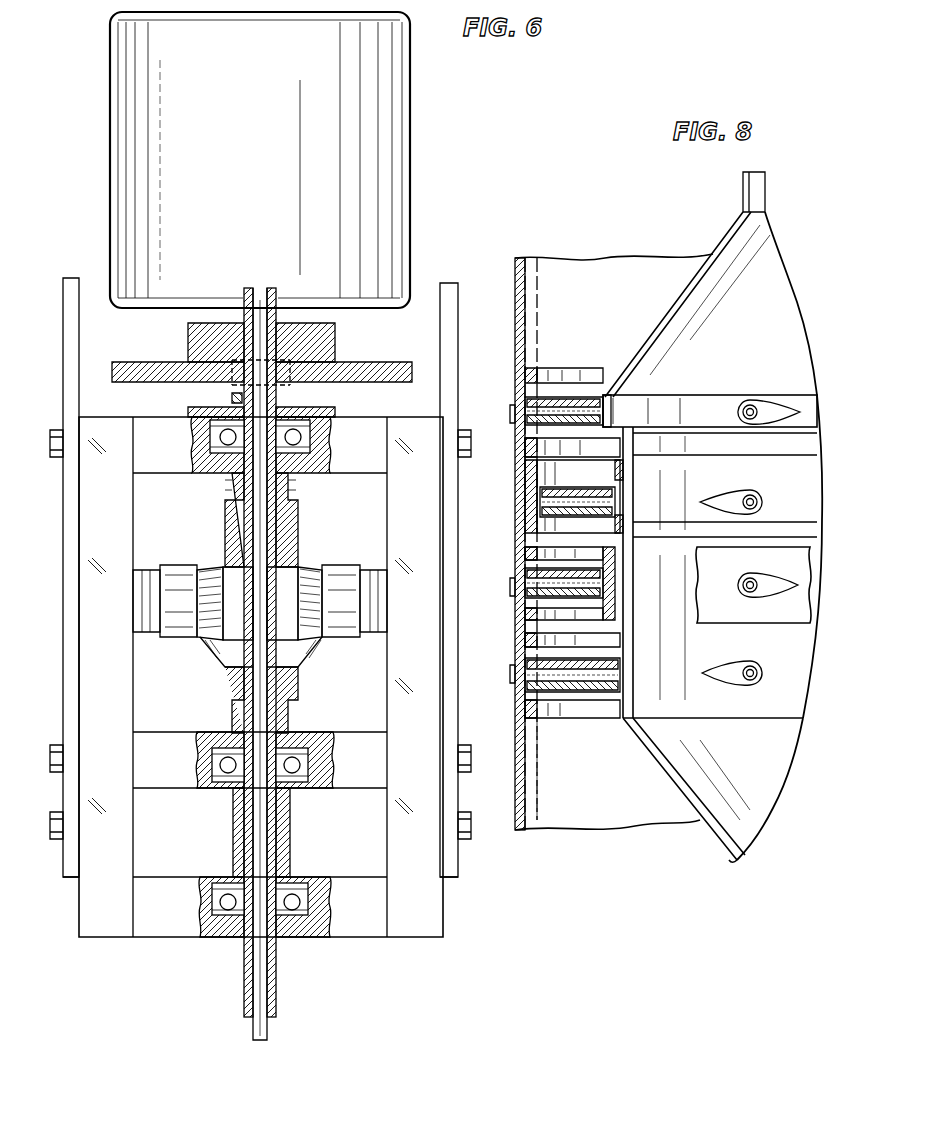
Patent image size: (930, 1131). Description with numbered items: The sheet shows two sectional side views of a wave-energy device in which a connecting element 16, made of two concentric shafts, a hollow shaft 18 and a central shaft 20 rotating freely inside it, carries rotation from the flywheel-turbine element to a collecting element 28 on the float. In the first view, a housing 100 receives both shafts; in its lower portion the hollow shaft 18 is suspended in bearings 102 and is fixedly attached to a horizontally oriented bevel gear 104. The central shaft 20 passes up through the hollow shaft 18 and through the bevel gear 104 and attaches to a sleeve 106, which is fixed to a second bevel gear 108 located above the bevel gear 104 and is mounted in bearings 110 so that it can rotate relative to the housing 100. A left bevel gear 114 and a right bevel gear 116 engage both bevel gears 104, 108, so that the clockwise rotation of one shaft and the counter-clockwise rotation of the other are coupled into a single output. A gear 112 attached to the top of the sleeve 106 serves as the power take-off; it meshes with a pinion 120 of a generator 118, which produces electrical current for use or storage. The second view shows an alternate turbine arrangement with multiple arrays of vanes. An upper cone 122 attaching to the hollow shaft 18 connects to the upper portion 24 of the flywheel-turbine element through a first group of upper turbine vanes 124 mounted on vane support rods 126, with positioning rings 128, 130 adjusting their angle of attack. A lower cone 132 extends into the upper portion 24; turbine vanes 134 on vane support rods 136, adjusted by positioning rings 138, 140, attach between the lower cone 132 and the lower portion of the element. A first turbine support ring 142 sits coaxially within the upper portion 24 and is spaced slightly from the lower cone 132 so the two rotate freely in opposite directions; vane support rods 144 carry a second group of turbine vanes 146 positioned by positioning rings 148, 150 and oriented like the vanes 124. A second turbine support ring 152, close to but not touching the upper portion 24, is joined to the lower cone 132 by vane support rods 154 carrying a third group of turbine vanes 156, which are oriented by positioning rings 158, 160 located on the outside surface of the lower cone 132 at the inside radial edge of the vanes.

In FIG. 6, the connecting element 16 is at (213, 1002).
In FIG. 6, the hollow shaft 18 is at (283, 1003).
In FIG. 8, the hollow shaft 18 is at (756, 174).
In FIG. 6, the central shaft 20 is at (270, 1030).
In FIG. 8, the upper portion of the flywheel-turbine element 24 is at (576, 251).
In FIG. 6, the collecting element 28 is at (456, 228).
In FIG. 6, the housing 100 is at (456, 292).
In FIG. 6, the bearings 102 is at (296, 790).
In FIG. 6, the bevel gear 104 is at (323, 650).
In FIG. 6, the sleeve 106 is at (275, 530).
In FIG. 6, the bevel gear 108 is at (305, 545).
In FIG. 6, the bearings 110 is at (300, 437).
In FIG. 6, the gear 112 is at (365, 383).
In FIG. 6, the left bevel gear 114 is at (200, 565).
In FIG. 6, the right bevel gear 116 is at (318, 598).
In FIG. 6, the generator 118 is at (388, 130).
In FIG. 6, the pinion 120 is at (335, 340).
In FIG. 8, the upper cone 122 is at (740, 236).
In FIG. 8, the upper turbine vanes 124 is at (615, 378).
In FIG. 8, the vane support rods 126 is at (565, 408).
In FIG. 8, the positioning ring 128 is at (556, 368).
In FIG. 8, the positioning ring 130 is at (525, 447).
In FIG. 8, the lower cone 132 is at (725, 815).
In FIG. 8, the turbine vanes 134 is at (612, 700).
In FIG. 8, the vane support rods 136 is at (618, 665).
In FIG. 8, the positioning ring 138 is at (526, 634).
In FIG. 8, the positioning ring 140 is at (552, 708).
In FIG. 8, the first turbine support ring 142 is at (615, 630).
In FIG. 8, the vane support rods 144 is at (615, 583).
In FIG. 8, the second group of turbine vanes 146 is at (524, 568).
In FIG. 8, the positioning ring 148 is at (525, 553).
In FIG. 8, the positioning ring 150 is at (525, 615).
In FIG. 8, the second turbine support ring 152 is at (525, 474).
In FIG. 8, the vane support rods 154 is at (612, 502).
In FIG. 8, the third group of turbine vanes 156 is at (615, 466).
In FIG. 8, the positioning ring 158 is at (633, 467).
In FIG. 8, the positioning ring 160 is at (612, 528).